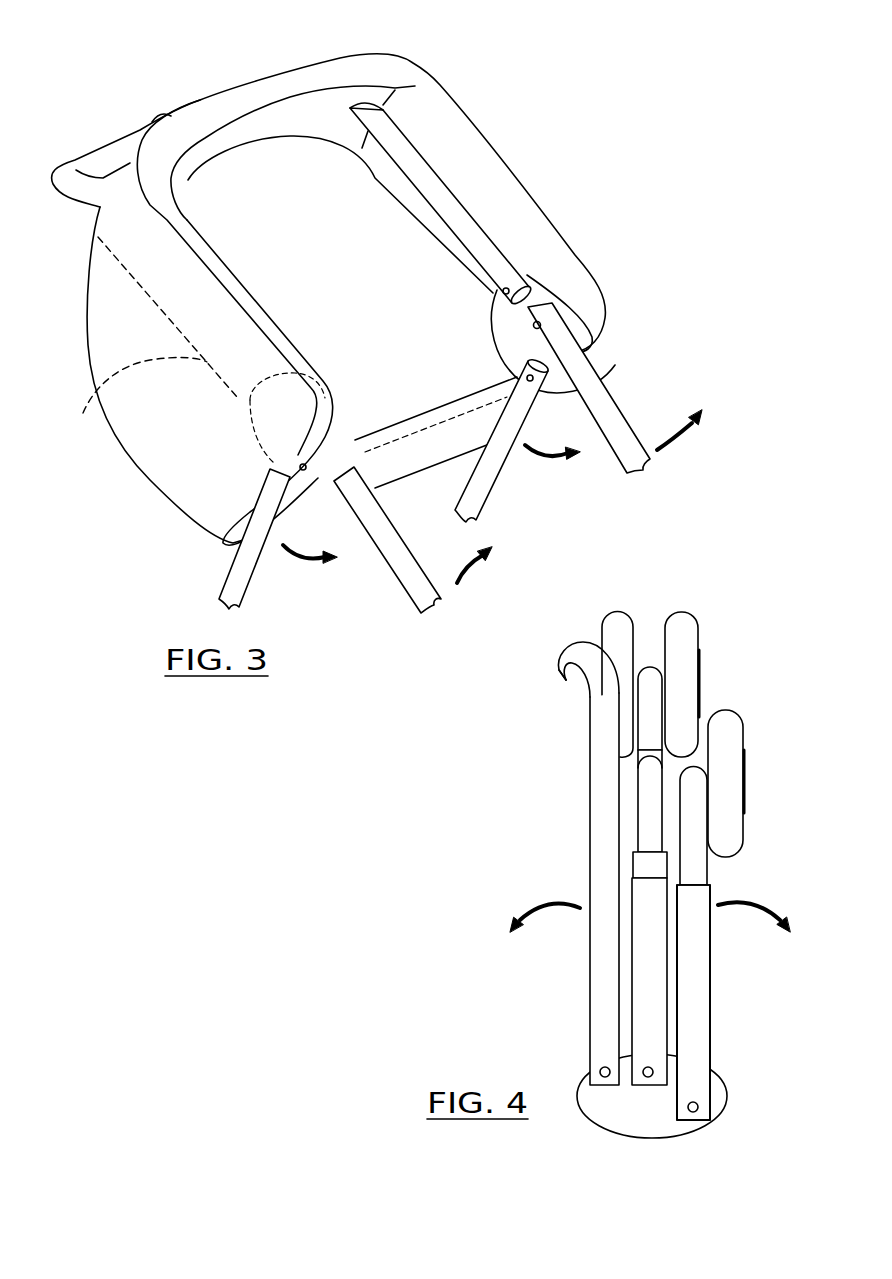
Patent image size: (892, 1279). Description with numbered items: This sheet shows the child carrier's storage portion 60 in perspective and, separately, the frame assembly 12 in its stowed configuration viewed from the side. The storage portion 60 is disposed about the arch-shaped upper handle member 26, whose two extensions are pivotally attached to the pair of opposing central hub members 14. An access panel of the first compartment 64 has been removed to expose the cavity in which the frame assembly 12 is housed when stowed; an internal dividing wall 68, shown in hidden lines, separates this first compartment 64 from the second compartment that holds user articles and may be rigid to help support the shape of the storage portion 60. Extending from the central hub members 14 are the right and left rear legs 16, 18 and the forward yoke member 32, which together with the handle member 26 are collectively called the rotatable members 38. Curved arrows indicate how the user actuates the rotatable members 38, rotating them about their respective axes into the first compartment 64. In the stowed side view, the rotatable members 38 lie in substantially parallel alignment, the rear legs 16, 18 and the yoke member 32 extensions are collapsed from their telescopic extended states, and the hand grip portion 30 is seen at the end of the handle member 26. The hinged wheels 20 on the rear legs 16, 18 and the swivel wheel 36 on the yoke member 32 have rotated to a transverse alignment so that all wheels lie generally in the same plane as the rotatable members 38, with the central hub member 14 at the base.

In FIG. 3, the frame assembly 12 is at (597, 377).
In FIG. 4, the frame assembly 12 is at (476, 790).
In FIG. 3, the central hub member 14 is at (593, 342).
In FIG. 4, the central hub member 14 is at (577, 1077).
In FIG. 3, the right rear leg 16 is at (228, 575).
In FIG. 4, the right rear leg 16 is at (750, 985).
In FIG. 3, the left rear leg 18 is at (503, 467).
In FIG. 4, the left rear leg 18 is at (693, 1002).
In FIG. 4, the hinged wheel 20 is at (738, 731).
In FIG. 3, the upper handle member 26 is at (427, 163).
In FIG. 4, the upper handle member 26 is at (588, 733).
In FIG. 4, the hand grip portion 30 is at (563, 665).
In FIG. 3, the forward yoke member 32 is at (627, 413).
In FIG. 4, the forward yoke member 32 is at (637, 797).
In FIG. 4, the swivel wheel 36 is at (700, 635).
In FIG. 3, the rotatable members 38 is at (480, 230).
In FIG. 4, the rotatable members 38 is at (633, 983).
In FIG. 3, the storage portion 60 is at (427, 80).
In FIG. 3, the first compartment 64 is at (342, 112).
In FIG. 3, the internal dividing wall 68 is at (85, 411).